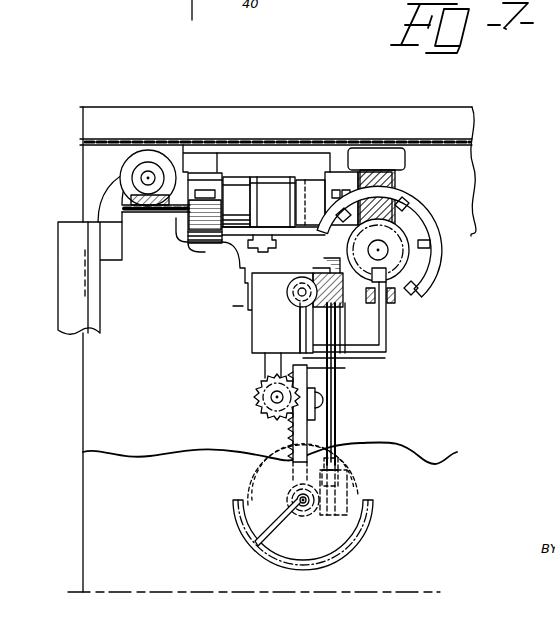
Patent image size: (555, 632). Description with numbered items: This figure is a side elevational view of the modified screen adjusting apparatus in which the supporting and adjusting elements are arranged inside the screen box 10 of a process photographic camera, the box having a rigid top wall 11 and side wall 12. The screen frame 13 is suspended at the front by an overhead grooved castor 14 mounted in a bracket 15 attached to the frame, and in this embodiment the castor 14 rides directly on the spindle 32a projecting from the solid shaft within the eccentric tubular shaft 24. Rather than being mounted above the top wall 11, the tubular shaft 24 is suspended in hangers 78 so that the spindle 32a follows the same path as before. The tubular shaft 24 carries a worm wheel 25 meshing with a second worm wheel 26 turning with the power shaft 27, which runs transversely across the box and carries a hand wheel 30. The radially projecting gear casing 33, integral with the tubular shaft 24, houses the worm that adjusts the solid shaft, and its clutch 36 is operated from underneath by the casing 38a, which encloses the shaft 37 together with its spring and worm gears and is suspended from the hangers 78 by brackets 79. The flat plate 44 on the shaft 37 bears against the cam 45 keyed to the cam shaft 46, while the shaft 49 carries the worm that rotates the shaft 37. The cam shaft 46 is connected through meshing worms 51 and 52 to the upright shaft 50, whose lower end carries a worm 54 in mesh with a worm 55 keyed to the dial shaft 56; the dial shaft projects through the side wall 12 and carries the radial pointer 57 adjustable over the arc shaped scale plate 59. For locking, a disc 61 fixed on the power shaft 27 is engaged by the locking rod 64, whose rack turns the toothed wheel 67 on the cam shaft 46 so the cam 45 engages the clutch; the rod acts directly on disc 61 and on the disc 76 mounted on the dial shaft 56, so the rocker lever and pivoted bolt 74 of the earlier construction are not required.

The screen box 10 is at (476, 184).
The top wall 11 is at (284, 112).
The side wall 12 is at (83, 507).
The screen frame 13 is at (90, 298).
The grooved castor 14 is at (128, 166).
The bracket 15 is at (110, 197).
The tubular shaft 24 is at (281, 190).
The worm wheel 25 is at (405, 178).
The second worm wheel 26 is at (420, 229).
The power shaft 27 is at (376, 252).
The hand wheel 30 is at (436, 236).
The spindle 32a is at (166, 214).
The gear casing 33 is at (293, 186).
The clutch 36 is at (262, 243).
The shaft 37 is at (265, 365).
The casing 38a is at (312, 330).
The flat plate 44 is at (330, 366).
The cam 45 is at (322, 399).
The cam shaft 46 is at (270, 399).
The shaft 49 is at (292, 296).
The upright shaft 50 is at (337, 385).
The worm 51 is at (290, 290).
The worm 52 is at (311, 278).
The worm 54 is at (350, 497).
The worm 55 is at (300, 490).
The dial shaft 56 is at (306, 508).
The radial pointer 57 is at (284, 520).
The scale plate 59 is at (240, 528).
The disc 61 is at (420, 268).
The locking rod 64 is at (388, 323).
The toothed wheel 67 is at (258, 388).
The pivoted bolt 74 is at (310, 434).
The disc 76 is at (290, 443).
The hanger 78 is at (232, 180).
The bracket 79 is at (225, 270).